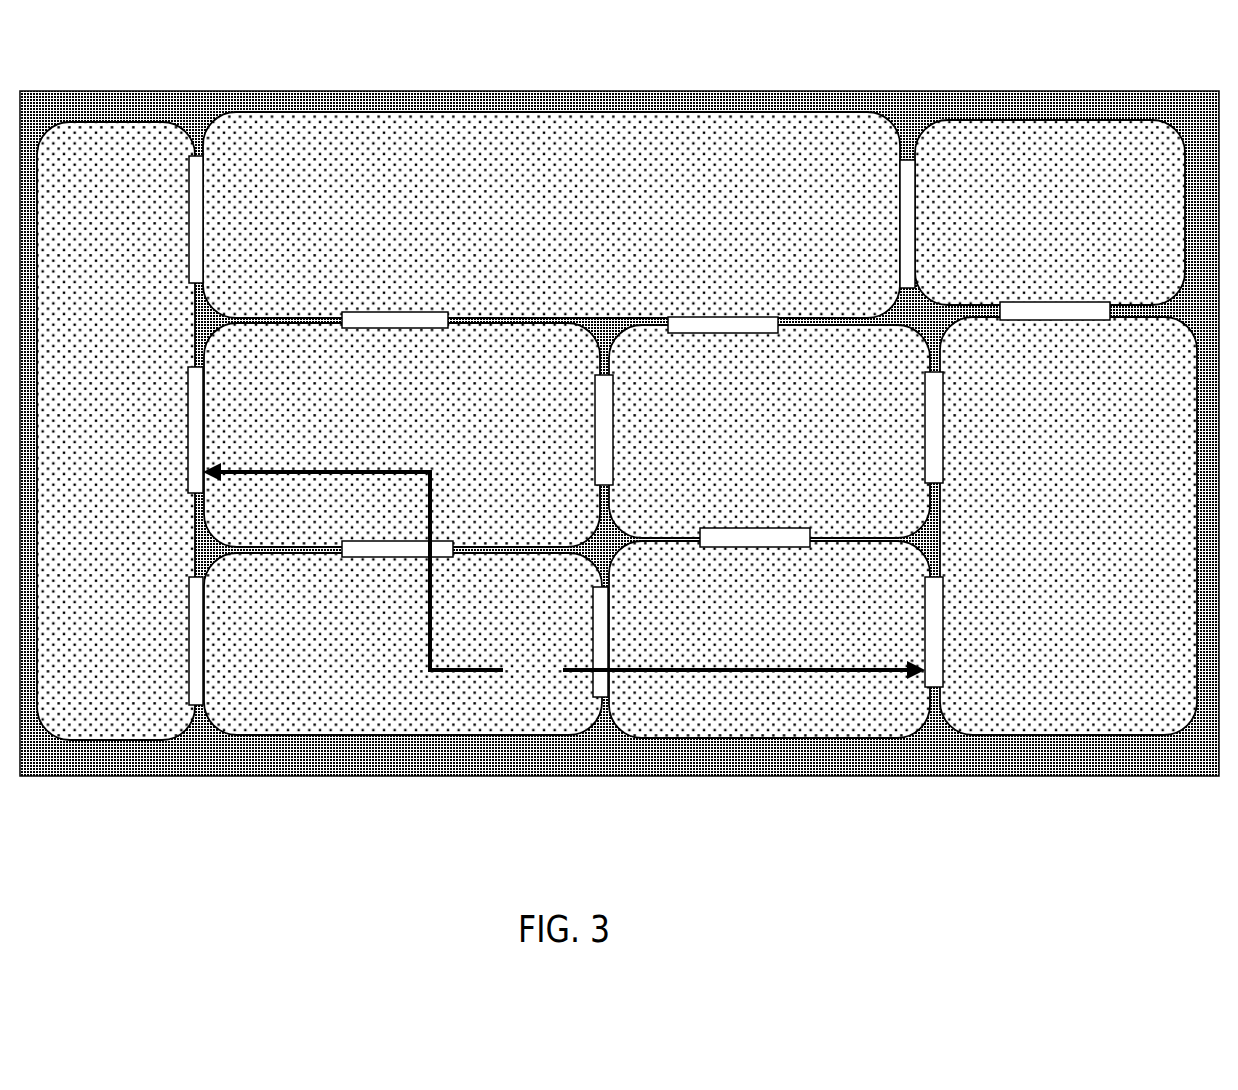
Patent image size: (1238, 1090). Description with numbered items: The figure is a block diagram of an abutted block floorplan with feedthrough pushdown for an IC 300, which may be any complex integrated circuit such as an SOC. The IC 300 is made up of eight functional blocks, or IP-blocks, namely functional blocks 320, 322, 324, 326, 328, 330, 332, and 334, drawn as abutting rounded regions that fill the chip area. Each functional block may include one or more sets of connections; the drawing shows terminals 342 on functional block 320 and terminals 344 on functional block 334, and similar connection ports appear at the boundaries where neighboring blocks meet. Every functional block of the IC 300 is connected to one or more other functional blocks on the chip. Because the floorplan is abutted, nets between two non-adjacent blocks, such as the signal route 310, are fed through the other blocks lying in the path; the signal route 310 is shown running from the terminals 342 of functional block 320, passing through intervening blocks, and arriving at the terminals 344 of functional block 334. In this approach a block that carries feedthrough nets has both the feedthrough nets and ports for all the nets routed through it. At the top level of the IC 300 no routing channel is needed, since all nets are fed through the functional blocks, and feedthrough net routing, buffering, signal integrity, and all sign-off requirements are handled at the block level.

The IC 300 is at (488, 66).
The signal route 310 is at (564, 574).
The functional block 320 is at (116, 431).
The functional block 322 is at (551, 215).
The functional block 324 is at (1050, 212).
The functional block 326 is at (402, 435).
The functional block 328 is at (769, 431).
The functional block 330 is at (403, 644).
The functional block 332 is at (769, 639).
The functional block 334 is at (1068, 526).
The terminals 342 is at (178, 466).
The terminals 344 is at (960, 608).